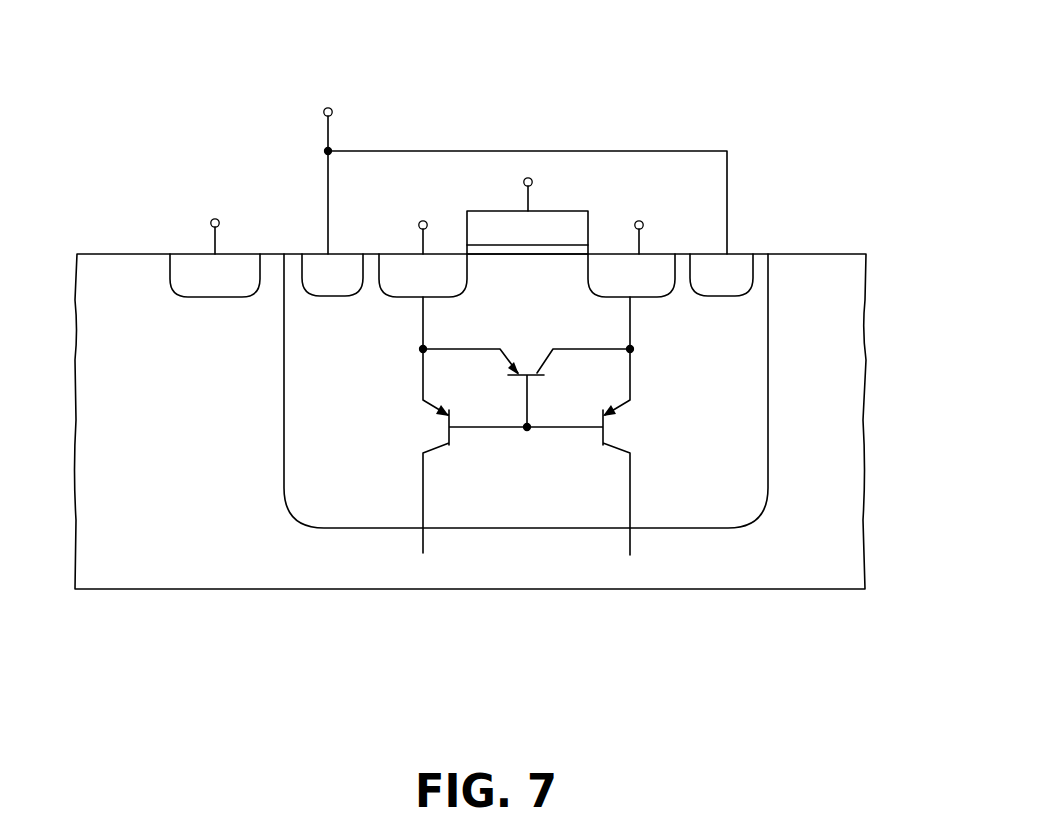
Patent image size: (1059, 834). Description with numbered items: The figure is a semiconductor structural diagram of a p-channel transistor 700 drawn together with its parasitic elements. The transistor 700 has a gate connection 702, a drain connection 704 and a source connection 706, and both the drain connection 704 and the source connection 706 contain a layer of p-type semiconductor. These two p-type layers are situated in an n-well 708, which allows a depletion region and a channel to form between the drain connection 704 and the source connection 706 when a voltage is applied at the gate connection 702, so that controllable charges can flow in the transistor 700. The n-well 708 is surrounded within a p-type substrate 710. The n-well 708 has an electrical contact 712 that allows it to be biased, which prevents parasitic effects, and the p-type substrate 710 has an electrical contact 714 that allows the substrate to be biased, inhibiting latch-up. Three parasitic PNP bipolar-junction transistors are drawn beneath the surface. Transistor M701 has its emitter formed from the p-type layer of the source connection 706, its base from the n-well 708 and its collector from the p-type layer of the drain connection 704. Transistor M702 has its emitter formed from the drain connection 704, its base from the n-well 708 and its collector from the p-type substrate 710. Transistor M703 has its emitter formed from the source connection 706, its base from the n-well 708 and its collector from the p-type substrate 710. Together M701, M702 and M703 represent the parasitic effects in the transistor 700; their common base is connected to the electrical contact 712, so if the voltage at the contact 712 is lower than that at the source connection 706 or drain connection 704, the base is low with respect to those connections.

The p-channel transistor 700 is at (745, 113).
The gate connection 702 is at (535, 181).
The drain connection 704 is at (646, 224).
The source connection 706 is at (417, 224).
The n-well 708 is at (330, 490).
The p-type substrate 710 is at (135, 567).
The electrical contact 712 is at (320, 111).
The electrical contact 714 is at (208, 222).
The parasitic bipolar-junction transistor M701 is at (527, 371).
The parasitic bipolar-junction transistor M702 is at (610, 426).
The parasitic bipolar-junction transistor M703 is at (445, 425).